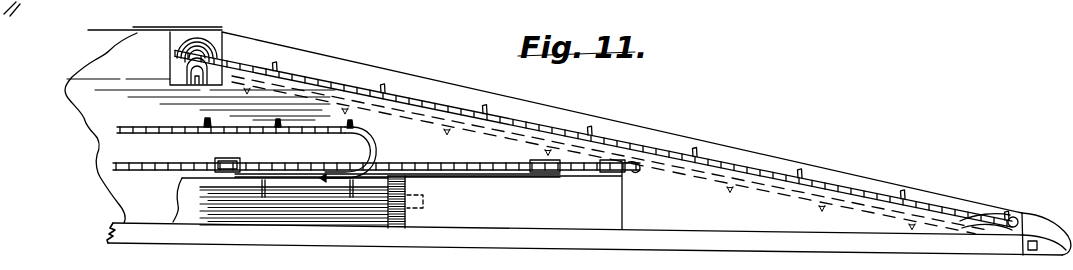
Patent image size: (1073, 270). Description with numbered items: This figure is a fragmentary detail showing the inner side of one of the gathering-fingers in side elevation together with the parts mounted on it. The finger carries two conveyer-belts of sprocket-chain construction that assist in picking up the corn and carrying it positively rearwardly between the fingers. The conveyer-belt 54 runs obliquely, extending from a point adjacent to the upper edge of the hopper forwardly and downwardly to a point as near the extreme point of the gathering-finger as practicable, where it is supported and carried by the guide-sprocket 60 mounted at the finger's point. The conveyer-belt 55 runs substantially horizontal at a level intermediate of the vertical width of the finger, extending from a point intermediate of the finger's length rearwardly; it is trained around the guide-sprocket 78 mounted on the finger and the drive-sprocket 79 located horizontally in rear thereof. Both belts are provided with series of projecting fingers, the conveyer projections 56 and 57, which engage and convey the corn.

The conveyer-belt 54 is at (735, 170).
The conveyer-belt 55 is at (505, 165).
The conveyer projections 56 is at (904, 196).
The conveyer projections 57 is at (640, 166).
The guide-sprocket 60 is at (1017, 214).
The guide-sprocket 78 is at (620, 171).
The drive-sprocket 79 is at (233, 160).